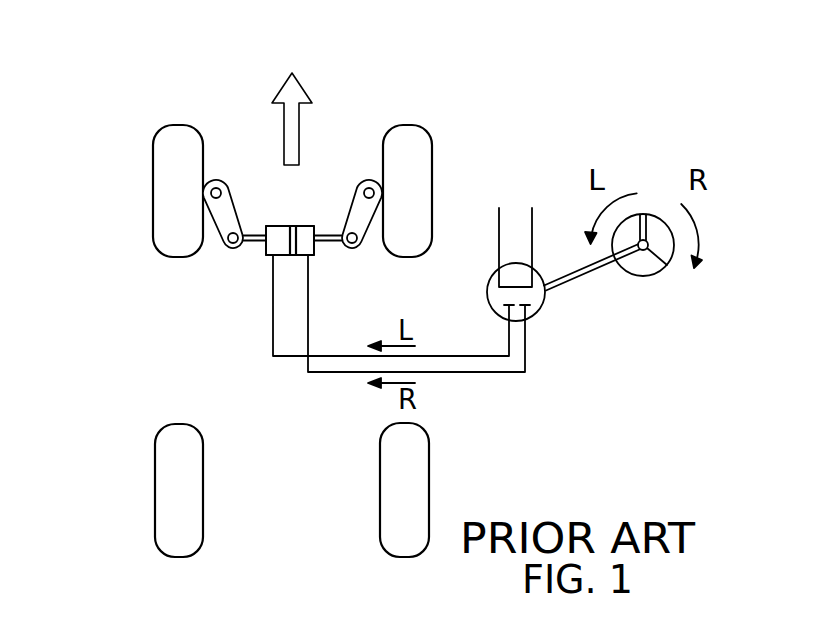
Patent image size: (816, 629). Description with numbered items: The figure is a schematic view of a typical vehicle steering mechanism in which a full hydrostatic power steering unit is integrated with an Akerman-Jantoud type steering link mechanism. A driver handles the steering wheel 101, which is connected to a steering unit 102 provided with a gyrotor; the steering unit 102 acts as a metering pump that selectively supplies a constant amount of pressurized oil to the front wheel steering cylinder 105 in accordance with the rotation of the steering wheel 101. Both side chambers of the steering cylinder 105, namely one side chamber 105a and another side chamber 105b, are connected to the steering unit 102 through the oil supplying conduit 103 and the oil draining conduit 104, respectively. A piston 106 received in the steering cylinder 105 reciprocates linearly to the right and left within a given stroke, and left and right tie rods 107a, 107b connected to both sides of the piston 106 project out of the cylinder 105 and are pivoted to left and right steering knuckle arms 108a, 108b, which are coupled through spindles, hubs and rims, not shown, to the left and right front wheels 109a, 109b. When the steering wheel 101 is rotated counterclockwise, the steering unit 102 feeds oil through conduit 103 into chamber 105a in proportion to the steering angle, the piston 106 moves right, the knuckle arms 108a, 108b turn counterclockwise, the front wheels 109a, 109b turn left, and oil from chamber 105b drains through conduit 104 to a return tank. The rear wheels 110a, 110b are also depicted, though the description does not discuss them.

The steering wheel 101 is at (632, 275).
The steering unit 102 is at (537, 263).
The oil supplying conduit 103 is at (453, 356).
The oil draining conduit 104 is at (472, 373).
The front wheel steering cylinder 105 is at (306, 180).
The side chamber 105a is at (277, 232).
The side chamber 105b is at (308, 232).
The piston 106 is at (294, 247).
The left tie rod 107a is at (253, 242).
The right tie rod 107b is at (325, 242).
The left steering knuckle arm 108a is at (225, 182).
The right steering knuckle arm 108b is at (362, 182).
The left front wheel 109a is at (168, 203).
The right front wheel 109b is at (417, 180).
The left rear wheel 110a is at (163, 468).
The right rear wheel 110b is at (420, 471).